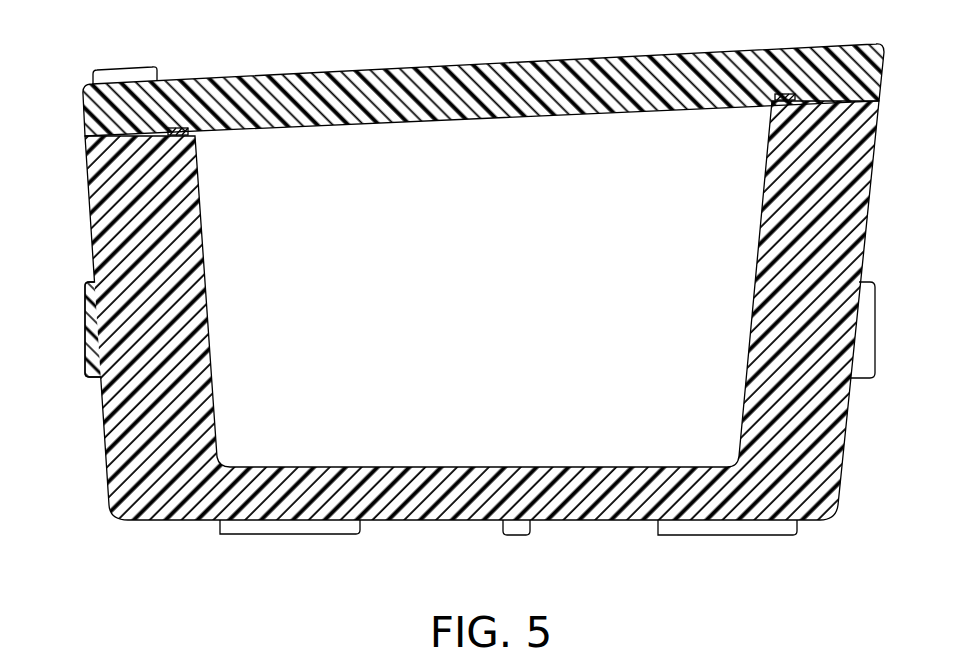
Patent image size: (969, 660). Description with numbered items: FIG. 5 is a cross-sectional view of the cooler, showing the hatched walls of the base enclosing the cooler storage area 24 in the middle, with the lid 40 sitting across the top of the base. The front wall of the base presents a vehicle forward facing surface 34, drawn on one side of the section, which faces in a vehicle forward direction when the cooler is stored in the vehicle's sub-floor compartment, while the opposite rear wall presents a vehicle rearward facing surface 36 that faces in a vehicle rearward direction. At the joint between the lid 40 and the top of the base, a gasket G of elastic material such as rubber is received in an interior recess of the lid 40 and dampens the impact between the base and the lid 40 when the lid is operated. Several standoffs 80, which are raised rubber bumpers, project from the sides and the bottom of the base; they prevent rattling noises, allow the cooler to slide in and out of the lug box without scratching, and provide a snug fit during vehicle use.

The cooler storage area 24 is at (432, 204).
The vehicle forward facing surface 34 is at (869, 190).
The vehicle rearward facing surface 36 is at (91, 206).
The lid 40 is at (606, 113).
The standoffs 80 is at (96, 334).
The gasket G is at (182, 127).